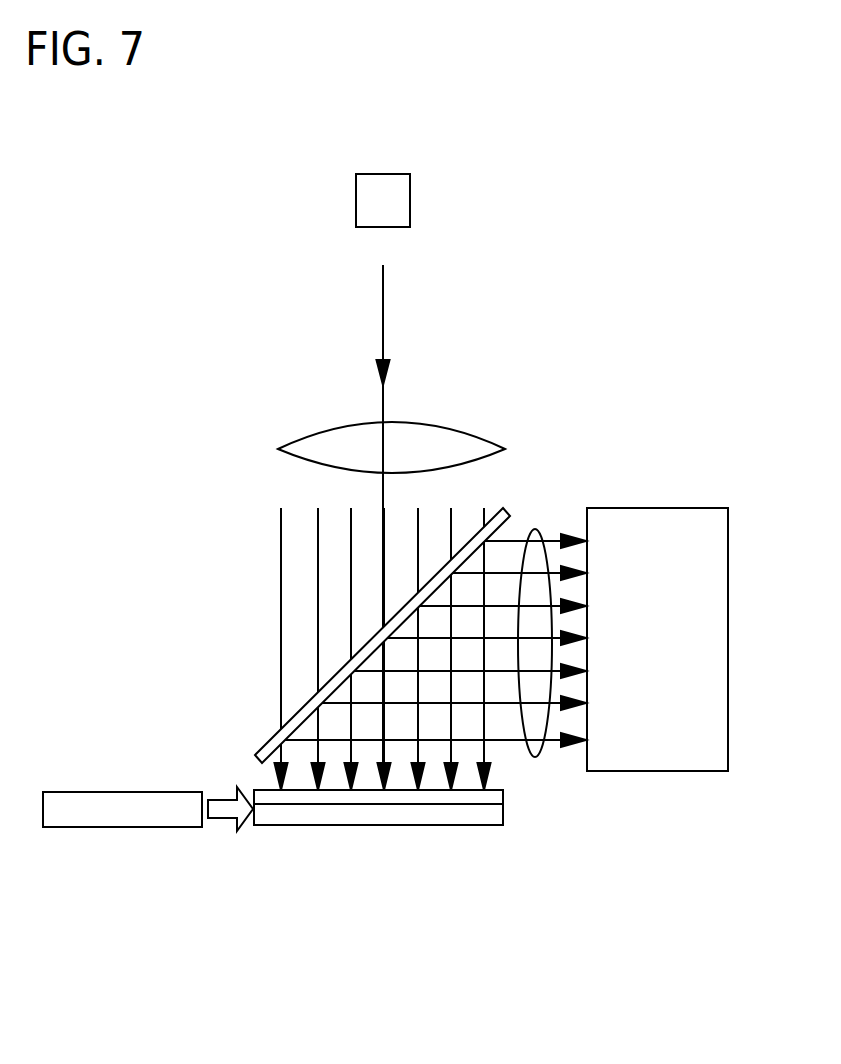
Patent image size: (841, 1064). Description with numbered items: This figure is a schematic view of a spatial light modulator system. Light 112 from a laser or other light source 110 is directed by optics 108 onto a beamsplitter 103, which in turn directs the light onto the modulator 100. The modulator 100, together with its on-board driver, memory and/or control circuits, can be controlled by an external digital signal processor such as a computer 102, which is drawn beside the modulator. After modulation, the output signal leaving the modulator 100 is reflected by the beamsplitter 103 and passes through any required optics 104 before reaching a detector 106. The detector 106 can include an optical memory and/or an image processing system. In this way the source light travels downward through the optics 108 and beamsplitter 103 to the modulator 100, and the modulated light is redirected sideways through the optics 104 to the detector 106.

The modulator 100 is at (505, 812).
The computer 102 is at (123, 820).
The beamsplitter 103 is at (270, 740).
The optics 104 is at (536, 757).
The detector 106 is at (677, 771).
The optics 108 is at (485, 433).
The light source 110 is at (410, 198).
The light 112 is at (383, 312).